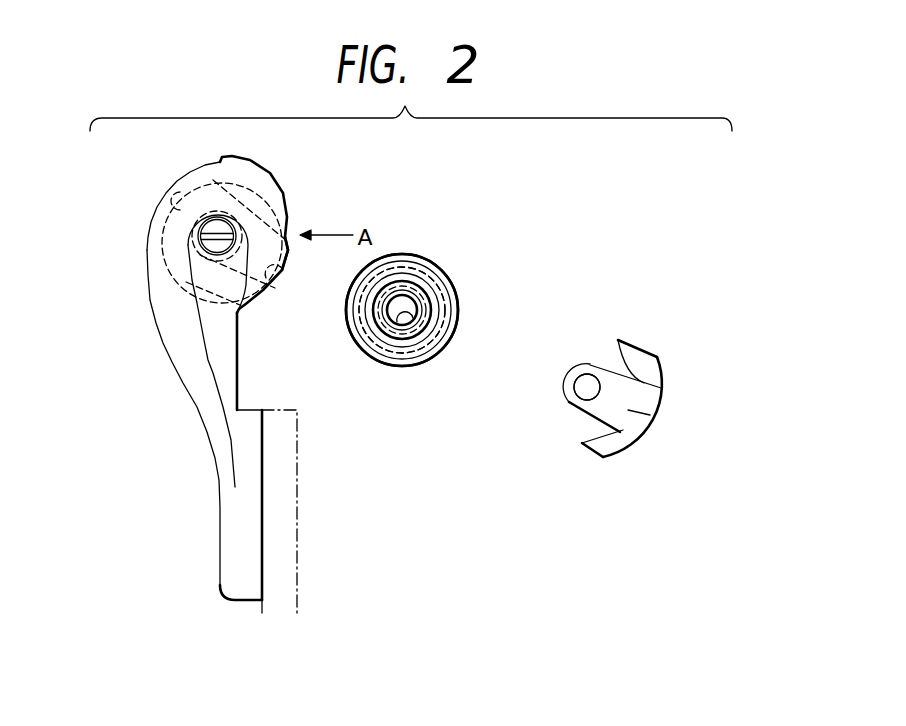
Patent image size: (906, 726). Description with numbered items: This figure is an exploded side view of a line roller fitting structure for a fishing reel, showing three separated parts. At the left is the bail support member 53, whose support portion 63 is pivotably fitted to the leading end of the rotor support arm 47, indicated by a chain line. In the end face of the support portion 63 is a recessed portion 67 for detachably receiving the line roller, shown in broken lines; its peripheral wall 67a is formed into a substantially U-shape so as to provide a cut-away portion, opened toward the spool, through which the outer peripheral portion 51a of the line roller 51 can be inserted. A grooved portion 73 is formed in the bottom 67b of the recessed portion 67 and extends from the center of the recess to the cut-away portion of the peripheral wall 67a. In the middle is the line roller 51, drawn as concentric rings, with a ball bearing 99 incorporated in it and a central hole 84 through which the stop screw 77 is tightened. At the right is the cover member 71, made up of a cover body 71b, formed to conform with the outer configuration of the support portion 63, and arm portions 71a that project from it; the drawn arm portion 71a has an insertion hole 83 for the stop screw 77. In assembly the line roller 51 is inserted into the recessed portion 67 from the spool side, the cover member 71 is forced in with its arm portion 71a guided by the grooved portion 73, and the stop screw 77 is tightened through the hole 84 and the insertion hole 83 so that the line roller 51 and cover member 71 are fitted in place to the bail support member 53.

The rotor support arm 47 is at (293, 557).
The line roller 51 is at (432, 257).
The outer peripheral portion 51a is at (458, 297).
The bail support member 53 is at (162, 327).
The support portion 63 is at (147, 258).
The recessed portion 67 is at (247, 187).
The peripheral wall 67a is at (177, 198).
The bottom 67b is at (290, 213).
The cover member 71 is at (655, 345).
The arm portion 71a is at (656, 422).
The cover body 71b is at (652, 372).
The grooved portion 73 is at (283, 272).
The stop screw 77 is at (217, 232).
The insertion hole 83 is at (583, 390).
The hole 84 is at (412, 322).
The ball bearing 99 is at (431, 290).